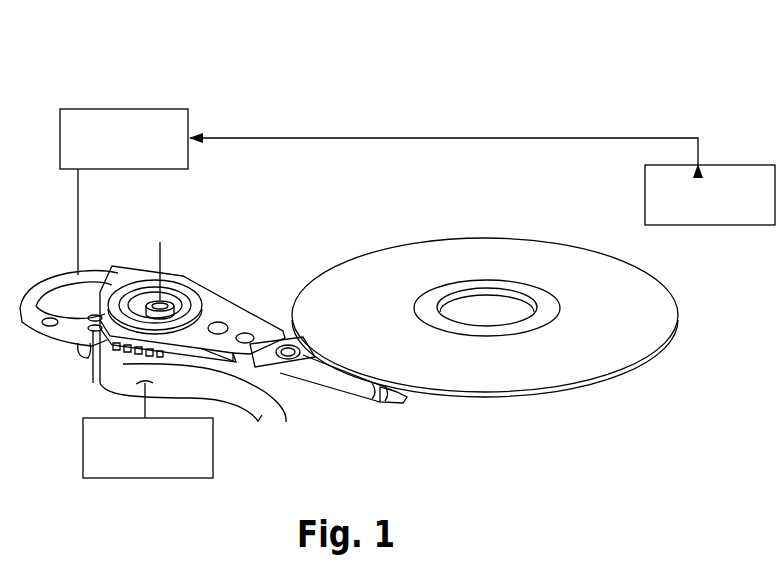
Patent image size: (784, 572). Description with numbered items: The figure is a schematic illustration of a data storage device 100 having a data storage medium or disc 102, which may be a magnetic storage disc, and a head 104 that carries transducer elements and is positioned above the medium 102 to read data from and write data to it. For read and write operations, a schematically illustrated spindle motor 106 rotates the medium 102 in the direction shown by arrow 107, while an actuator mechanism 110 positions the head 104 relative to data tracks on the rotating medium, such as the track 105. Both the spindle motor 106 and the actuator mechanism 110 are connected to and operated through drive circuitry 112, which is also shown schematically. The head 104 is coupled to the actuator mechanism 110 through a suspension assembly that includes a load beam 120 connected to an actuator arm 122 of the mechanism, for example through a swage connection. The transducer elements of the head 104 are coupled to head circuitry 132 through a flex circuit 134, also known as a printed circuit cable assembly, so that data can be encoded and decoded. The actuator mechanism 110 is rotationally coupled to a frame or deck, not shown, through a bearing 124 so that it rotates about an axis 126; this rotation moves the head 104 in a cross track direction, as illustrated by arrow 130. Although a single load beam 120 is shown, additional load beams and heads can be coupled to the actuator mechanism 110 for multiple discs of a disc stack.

The data storage device 100 is at (605, 106).
The data storage medium or disc 102 is at (571, 270).
The head 104 is at (404, 399).
The track 105 is at (547, 327).
The spindle motor 106 is at (744, 163).
The arrow 107 is at (372, 283).
The actuator mechanism 110 is at (179, 270).
The drive circuitry 112 is at (163, 107).
The load beam 120 is at (313, 365).
The actuator arm 122 is at (246, 306).
The bearing 124 is at (137, 270).
The axis 126 is at (153, 303).
The arrow 130 is at (368, 427).
The head circuitry 132 is at (83, 447).
The flex circuit 134 is at (200, 392).